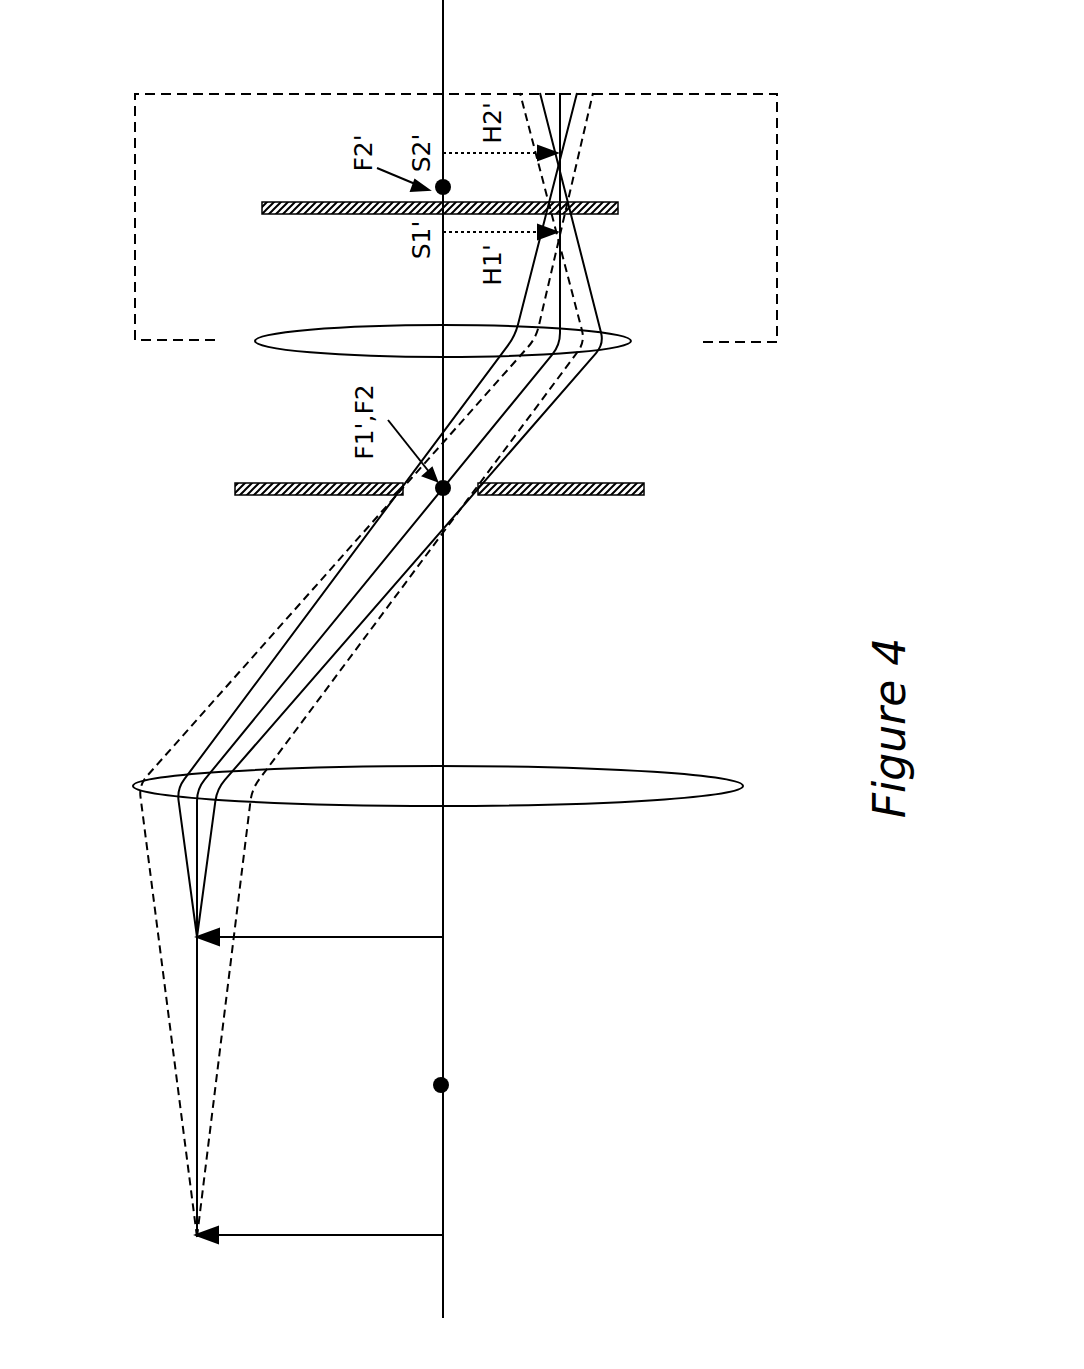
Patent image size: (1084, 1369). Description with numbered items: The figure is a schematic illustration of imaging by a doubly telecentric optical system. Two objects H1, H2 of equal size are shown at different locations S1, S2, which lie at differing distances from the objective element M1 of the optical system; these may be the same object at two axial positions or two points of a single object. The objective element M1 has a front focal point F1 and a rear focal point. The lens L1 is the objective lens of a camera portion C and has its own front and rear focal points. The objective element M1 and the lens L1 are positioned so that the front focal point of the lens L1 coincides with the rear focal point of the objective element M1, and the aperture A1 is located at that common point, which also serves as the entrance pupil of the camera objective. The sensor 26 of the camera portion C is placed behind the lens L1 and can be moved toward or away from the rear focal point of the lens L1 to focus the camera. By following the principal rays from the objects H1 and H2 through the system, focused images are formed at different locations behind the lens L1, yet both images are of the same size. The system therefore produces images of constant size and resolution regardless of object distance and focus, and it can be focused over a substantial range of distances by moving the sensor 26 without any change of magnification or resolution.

The sensor 26 is at (424, 207).
The camera portion C is at (482, 218).
The objective lens L1 is at (458, 341).
The objective element M1 is at (453, 788).
The aperture A1 is at (458, 489).
The front focal point F1 is at (458, 1085).
The location S1 is at (340, 1237).
The location S2 is at (341, 938).
The object H1 is at (320, 1265).
The object H2 is at (259, 1086).